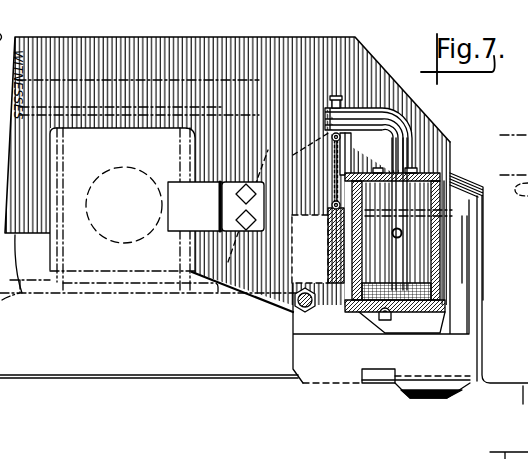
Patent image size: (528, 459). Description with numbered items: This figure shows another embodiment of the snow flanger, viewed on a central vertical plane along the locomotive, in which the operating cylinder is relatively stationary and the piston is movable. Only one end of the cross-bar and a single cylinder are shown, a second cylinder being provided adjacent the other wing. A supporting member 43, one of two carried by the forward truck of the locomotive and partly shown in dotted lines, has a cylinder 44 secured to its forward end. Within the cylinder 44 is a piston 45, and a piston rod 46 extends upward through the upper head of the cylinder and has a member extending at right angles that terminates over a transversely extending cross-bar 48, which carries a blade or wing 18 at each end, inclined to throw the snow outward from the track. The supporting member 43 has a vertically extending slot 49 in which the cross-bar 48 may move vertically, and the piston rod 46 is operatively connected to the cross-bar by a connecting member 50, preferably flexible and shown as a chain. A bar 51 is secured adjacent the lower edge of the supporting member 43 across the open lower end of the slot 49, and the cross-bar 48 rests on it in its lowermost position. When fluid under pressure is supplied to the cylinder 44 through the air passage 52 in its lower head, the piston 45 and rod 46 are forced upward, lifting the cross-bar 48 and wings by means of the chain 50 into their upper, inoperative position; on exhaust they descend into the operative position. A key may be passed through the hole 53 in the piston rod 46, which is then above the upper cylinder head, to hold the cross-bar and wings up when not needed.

The supporting member 43 is at (292, 34).
The cylinder 44 is at (455, 178).
The piston 45 is at (432, 318).
The piston rod 46 is at (367, 130).
The cross-bar 48 is at (328, 251).
The vertically extending slot 49 is at (348, 172).
The connecting member 50 is at (333, 189).
The bar 51 is at (300, 312).
The air passage 52 is at (390, 319).
The hole 53 is at (402, 232).
The blade or wing 18 is at (481, 247).